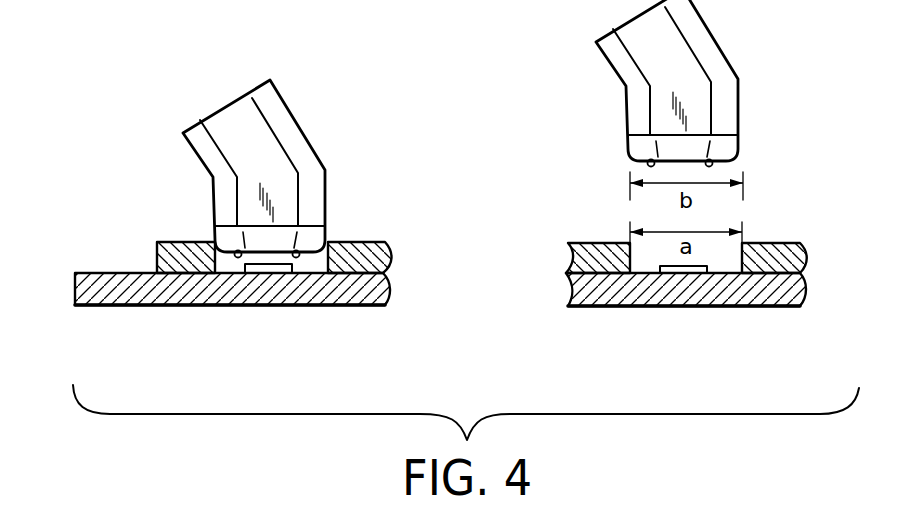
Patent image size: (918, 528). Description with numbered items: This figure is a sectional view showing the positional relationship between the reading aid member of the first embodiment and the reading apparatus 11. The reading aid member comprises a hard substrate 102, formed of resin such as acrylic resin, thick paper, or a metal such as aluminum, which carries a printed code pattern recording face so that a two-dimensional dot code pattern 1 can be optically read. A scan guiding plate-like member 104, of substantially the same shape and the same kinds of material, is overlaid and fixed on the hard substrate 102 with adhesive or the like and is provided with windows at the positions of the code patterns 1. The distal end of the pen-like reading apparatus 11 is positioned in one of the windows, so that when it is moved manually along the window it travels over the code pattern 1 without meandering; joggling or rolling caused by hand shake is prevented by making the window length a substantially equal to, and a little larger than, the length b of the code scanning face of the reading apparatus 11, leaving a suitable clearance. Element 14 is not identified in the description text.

The code pattern 1 is at (270, 269).
The reading apparatus 11 is at (293, 133).
The resist layer with opening 14 is at (807, 258).
The hard substrate 102 is at (392, 292).
The scan guiding plate-like member 104 is at (392, 258).